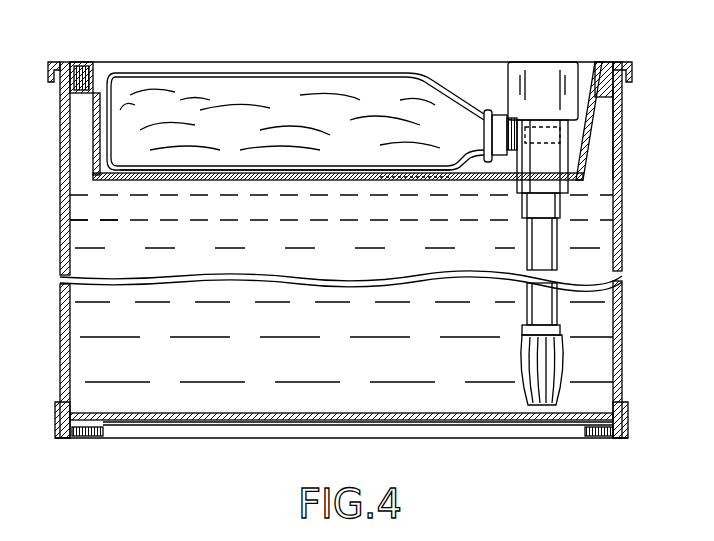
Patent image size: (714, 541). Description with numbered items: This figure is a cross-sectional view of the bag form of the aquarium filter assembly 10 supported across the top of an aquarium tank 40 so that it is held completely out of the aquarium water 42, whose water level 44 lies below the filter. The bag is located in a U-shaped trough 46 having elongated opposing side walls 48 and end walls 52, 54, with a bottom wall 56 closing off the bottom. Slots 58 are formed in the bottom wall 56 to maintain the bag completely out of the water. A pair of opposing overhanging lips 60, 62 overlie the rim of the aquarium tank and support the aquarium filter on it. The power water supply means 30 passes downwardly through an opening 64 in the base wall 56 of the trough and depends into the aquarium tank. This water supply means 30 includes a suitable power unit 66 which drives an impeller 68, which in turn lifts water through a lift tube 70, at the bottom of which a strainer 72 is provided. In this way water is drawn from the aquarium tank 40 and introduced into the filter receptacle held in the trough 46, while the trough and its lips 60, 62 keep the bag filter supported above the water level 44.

The flexible bag 10 is at (352, 74).
The power water supply means 30 is at (536, 217).
The aquarium tank 40 is at (60, 248).
The aquarium water 42 is at (100, 205).
The water level 44 is at (192, 197).
The U-shaped trough 46 is at (296, 178).
The side walls 48 is at (477, 50).
The end wall 52 is at (93, 162).
The end wall 54 is at (590, 150).
The bottom wall 56 is at (392, 180).
The slots 58 is at (338, 180).
The overhanging lip 60 is at (76, 45).
The overhanging lip 62 is at (628, 63).
The opening 64 is at (516, 186).
The power unit 66 is at (526, 85).
The impeller 68 is at (622, 127).
The lift tube 70 is at (558, 240).
The strainer 72 is at (562, 362).